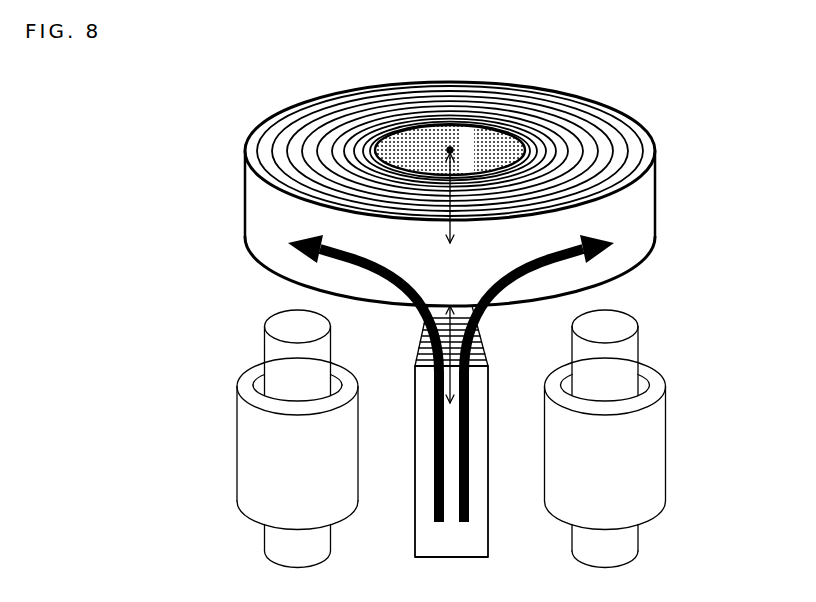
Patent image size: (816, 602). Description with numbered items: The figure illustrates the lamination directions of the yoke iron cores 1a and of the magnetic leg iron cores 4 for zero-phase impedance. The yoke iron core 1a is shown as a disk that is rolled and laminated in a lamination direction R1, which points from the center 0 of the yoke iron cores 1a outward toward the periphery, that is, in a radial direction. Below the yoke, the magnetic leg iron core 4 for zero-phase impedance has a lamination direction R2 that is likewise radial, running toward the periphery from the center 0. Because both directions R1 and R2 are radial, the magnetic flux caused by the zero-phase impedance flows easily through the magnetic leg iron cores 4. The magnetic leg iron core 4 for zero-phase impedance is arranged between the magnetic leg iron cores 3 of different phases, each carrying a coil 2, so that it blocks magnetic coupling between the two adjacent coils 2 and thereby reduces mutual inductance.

The yoke iron core 1a is at (638, 222).
The center of the yoke iron cores 0 is at (450, 150).
The lamination direction of the yoke iron cores R1 is at (444, 201).
The lamination direction of the magnetic leg iron cores for zero-phase impedance R2 is at (420, 352).
The coil 2 is at (655, 458).
The magnetic leg iron core 3 is at (627, 353).
The magnetic leg iron core for zero-phase impedance 4 is at (480, 522).